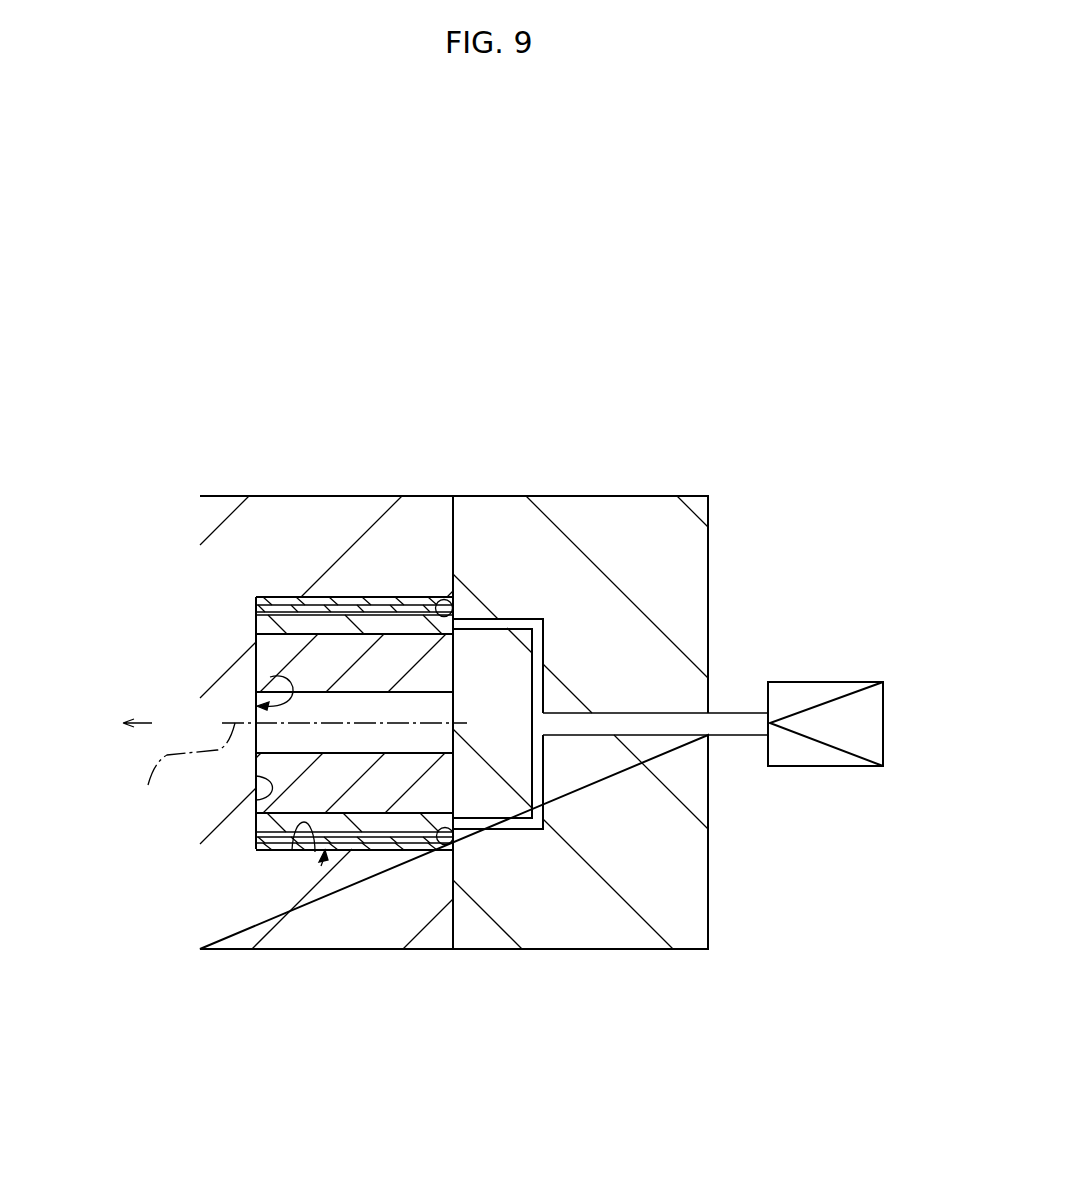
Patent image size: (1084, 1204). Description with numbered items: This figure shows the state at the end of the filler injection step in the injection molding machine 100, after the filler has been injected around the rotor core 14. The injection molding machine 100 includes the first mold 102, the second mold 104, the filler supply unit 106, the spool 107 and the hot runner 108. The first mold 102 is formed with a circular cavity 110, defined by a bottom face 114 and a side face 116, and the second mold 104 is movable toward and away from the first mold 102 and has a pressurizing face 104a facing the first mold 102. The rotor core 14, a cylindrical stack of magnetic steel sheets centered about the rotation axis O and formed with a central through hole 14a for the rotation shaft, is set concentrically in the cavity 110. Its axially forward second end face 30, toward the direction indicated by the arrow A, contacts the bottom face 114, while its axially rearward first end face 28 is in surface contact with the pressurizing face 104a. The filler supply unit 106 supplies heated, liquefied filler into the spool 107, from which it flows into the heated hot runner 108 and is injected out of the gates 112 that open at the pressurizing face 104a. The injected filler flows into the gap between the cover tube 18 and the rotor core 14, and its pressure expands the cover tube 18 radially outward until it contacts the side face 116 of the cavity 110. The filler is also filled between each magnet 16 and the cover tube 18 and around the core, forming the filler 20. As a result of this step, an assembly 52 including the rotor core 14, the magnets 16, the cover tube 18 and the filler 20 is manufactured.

The injection molding machine 100 is at (457, 212).
The first mold 102 is at (393, 356).
The second mold 104 is at (589, 356).
The pressurizing face 104a is at (453, 525).
The rotor core 14 is at (373, 676).
The through hole 14a is at (342, 692).
The magnets 16 is at (414, 622).
The cover tube 18 is at (283, 597).
The filler 20 is at (358, 604).
The first end face 28 is at (455, 662).
The second end face 30 is at (256, 658).
The assembly 52 is at (321, 866).
The filler supply unit 106 is at (798, 682).
The spool 107 is at (708, 780).
The hot runner 108 is at (512, 823).
The cavity 110 is at (270, 677).
The gates 112 is at (452, 600).
The bottom face 114 is at (256, 798).
The side face 116 is at (292, 850).
The arrow A is at (141, 712).
The rotation axis O is at (303, 767).